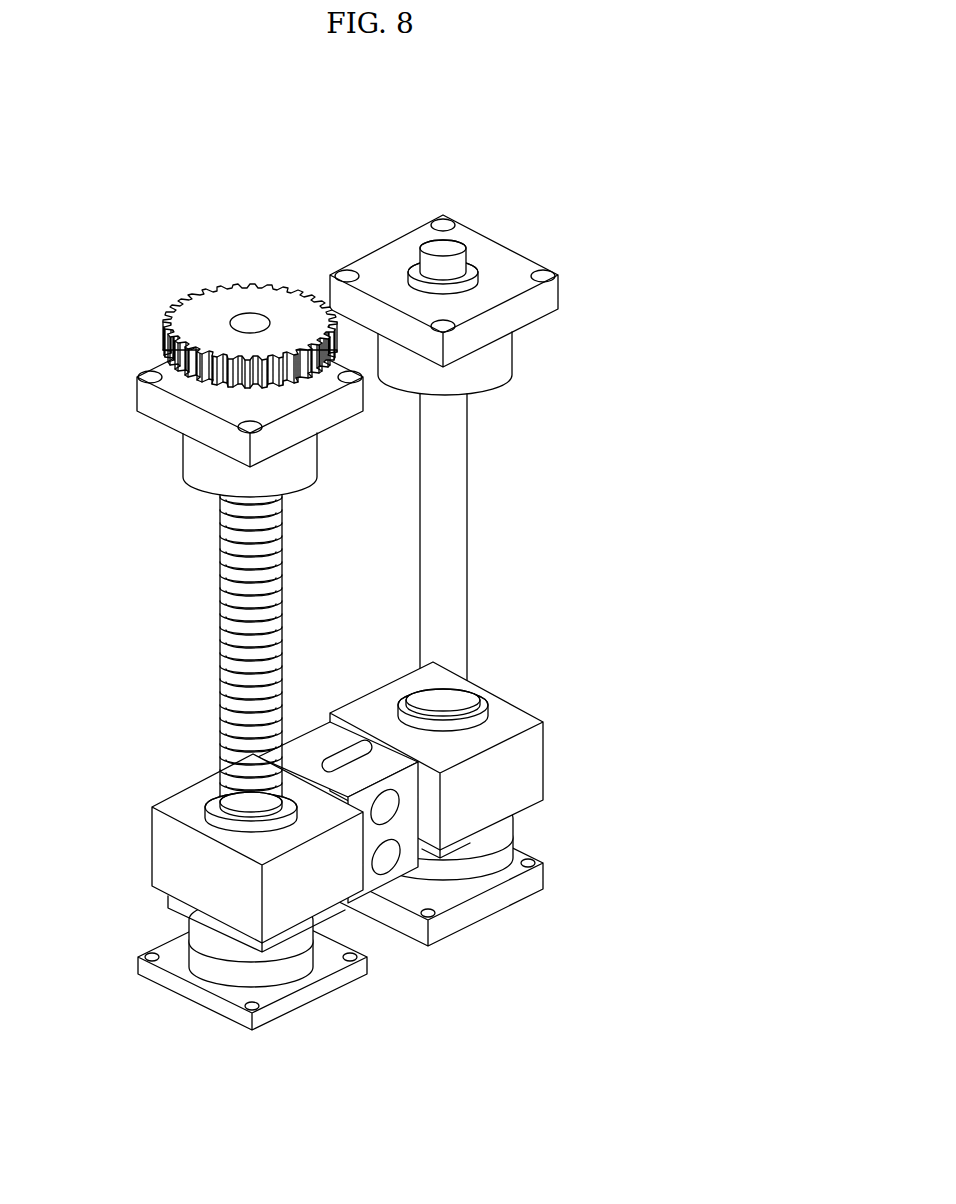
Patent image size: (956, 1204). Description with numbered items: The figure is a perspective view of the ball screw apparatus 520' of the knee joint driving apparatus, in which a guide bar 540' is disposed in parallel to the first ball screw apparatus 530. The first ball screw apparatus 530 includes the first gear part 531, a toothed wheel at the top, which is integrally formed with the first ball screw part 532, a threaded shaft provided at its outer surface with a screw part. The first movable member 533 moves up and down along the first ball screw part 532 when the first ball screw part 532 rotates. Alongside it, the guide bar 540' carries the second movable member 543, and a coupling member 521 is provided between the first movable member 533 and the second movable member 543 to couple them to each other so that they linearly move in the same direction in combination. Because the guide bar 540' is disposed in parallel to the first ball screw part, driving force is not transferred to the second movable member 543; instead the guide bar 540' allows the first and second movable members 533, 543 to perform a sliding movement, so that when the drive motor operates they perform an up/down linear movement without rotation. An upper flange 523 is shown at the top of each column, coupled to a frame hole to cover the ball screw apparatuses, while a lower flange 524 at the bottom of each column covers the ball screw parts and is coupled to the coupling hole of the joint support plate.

The ball screw apparatus 520' is at (525, 241).
The upper flange 523 is at (552, 289).
The lower flange 524 is at (487, 913).
The first gear part 531 is at (224, 292).
The first ball screw part 532 is at (222, 724).
The first movable member 533 is at (165, 855).
The first ball screw apparatus 530 is at (185, 657).
The guide bar 540' is at (527, 547).
The second movable member 543 is at (533, 745).
The coupling member 521 is at (410, 823).